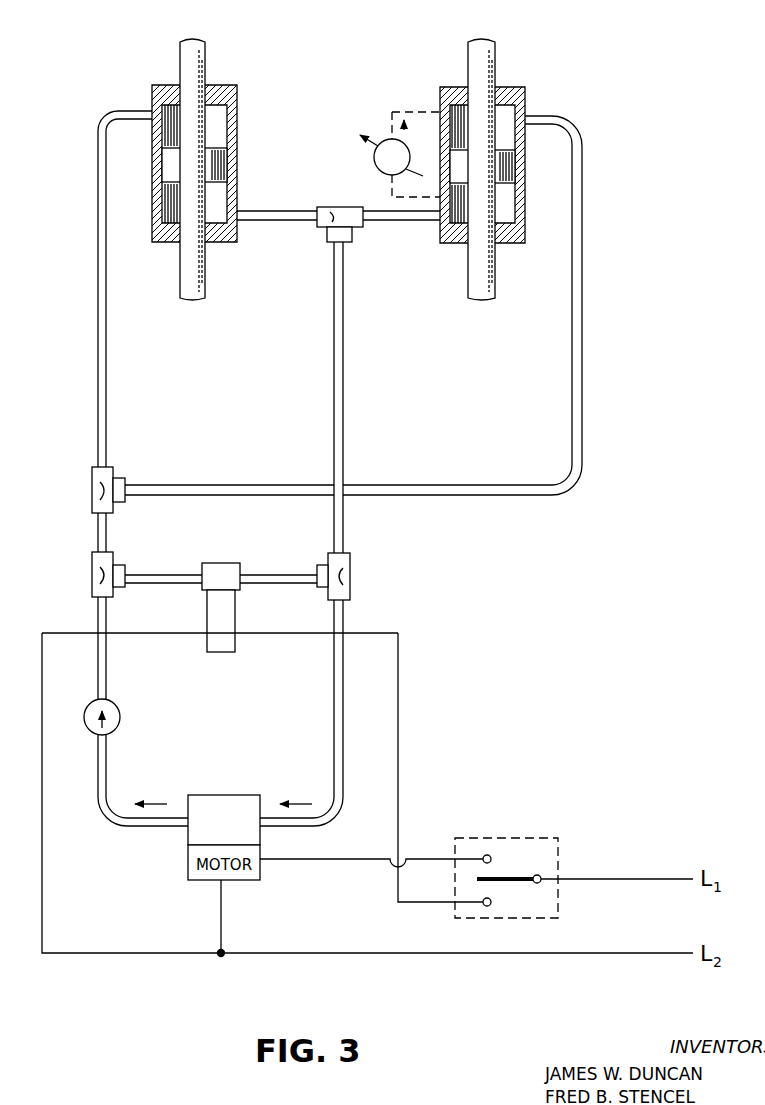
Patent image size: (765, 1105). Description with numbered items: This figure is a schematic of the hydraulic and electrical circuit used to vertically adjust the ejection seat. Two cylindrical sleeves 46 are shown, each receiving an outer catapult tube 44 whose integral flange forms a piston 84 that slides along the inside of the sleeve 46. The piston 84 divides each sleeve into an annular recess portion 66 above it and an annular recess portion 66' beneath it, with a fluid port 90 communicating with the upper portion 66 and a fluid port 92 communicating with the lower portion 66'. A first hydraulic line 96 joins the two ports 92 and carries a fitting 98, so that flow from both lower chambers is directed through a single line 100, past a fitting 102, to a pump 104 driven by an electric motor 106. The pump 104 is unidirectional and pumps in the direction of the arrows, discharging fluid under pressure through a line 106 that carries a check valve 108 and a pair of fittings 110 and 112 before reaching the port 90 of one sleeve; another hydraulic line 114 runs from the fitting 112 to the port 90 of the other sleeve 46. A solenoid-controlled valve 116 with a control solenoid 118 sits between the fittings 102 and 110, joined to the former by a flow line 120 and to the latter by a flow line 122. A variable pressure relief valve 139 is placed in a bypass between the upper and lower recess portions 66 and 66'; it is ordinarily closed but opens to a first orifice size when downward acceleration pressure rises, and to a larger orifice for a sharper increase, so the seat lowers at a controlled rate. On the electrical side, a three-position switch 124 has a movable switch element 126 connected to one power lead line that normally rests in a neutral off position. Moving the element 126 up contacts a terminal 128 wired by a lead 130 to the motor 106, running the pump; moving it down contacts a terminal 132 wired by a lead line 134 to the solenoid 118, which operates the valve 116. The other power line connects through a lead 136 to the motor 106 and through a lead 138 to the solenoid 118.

The outer catapult tube 44 is at (197, 267).
The cylindrical sleeve 46 is at (237, 117).
The annular recess portion 66 is at (291, 132).
The annular recess portion beneath piston 66' is at (291, 203).
The piston 84 is at (207, 165).
The fluid port 90 is at (152, 98).
The fluid port 92 is at (240, 212).
The first hydraulic line 96 is at (388, 217).
The fitting 98 is at (323, 222).
The line 100 is at (345, 377).
The fitting 102 is at (350, 568).
The pump 104 is at (225, 795).
The electric motor / discharge line 106 is at (107, 765).
The check valve 108 is at (120, 715).
The fitting 110 is at (92, 575).
The fitting 112 is at (92, 488).
The hydraulic line 114 is at (495, 490).
The solenoid-controlled valve 116 is at (222, 566).
The control solenoid 118 is at (238, 615).
The flow line 120 is at (278, 575).
The flow line 122 is at (158, 575).
The three-position switch 124 is at (528, 835).
The movable switch element 126 is at (523, 877).
The terminal 128 is at (487, 855).
The lead 130 is at (312, 859).
The terminal 132 is at (487, 907).
The lead line 134 is at (398, 712).
The lead 136 is at (222, 915).
The lead 138 is at (42, 851).
The variable pressure relief valve 139 is at (375, 168).